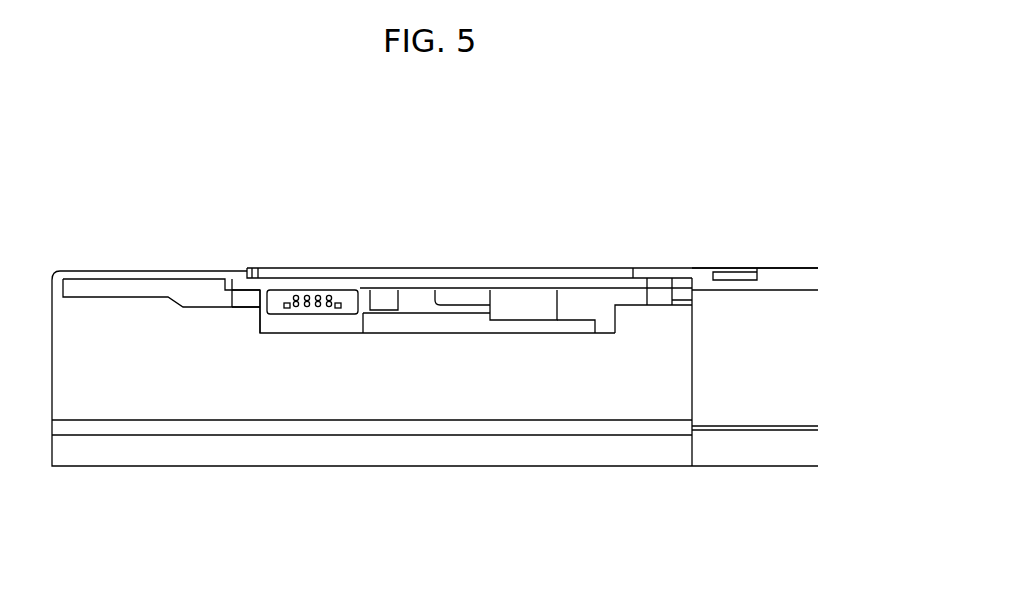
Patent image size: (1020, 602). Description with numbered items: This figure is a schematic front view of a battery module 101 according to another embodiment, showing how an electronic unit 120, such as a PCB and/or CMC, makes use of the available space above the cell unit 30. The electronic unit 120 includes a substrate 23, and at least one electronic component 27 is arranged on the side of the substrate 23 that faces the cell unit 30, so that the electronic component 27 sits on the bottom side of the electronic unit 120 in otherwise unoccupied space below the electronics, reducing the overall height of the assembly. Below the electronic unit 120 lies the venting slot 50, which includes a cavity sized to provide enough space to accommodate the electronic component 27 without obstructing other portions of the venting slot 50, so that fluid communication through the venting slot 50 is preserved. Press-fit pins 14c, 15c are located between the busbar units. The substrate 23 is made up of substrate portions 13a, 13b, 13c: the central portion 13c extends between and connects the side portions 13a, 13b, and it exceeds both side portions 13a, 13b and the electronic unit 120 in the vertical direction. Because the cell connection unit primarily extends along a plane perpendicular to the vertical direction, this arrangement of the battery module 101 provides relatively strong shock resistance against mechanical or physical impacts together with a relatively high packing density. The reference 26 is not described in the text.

The cell unit 30 is at (561, 497).
The side portion of the substrate 13a is at (645, 316).
The side portion of the substrate 13b is at (258, 316).
The central portion of the substrate 13c is at (446, 272).
The press-fit pin 14c is at (255, 272).
The press-fit pin 15c is at (620, 272).
The substrate 23 is at (472, 285).
The connector module 26 is at (345, 300).
The electronic component 27 is at (524, 300).
The venting slot 50 is at (577, 327).
The battery module 101 is at (775, 248).
The electronic unit 120 is at (415, 260).